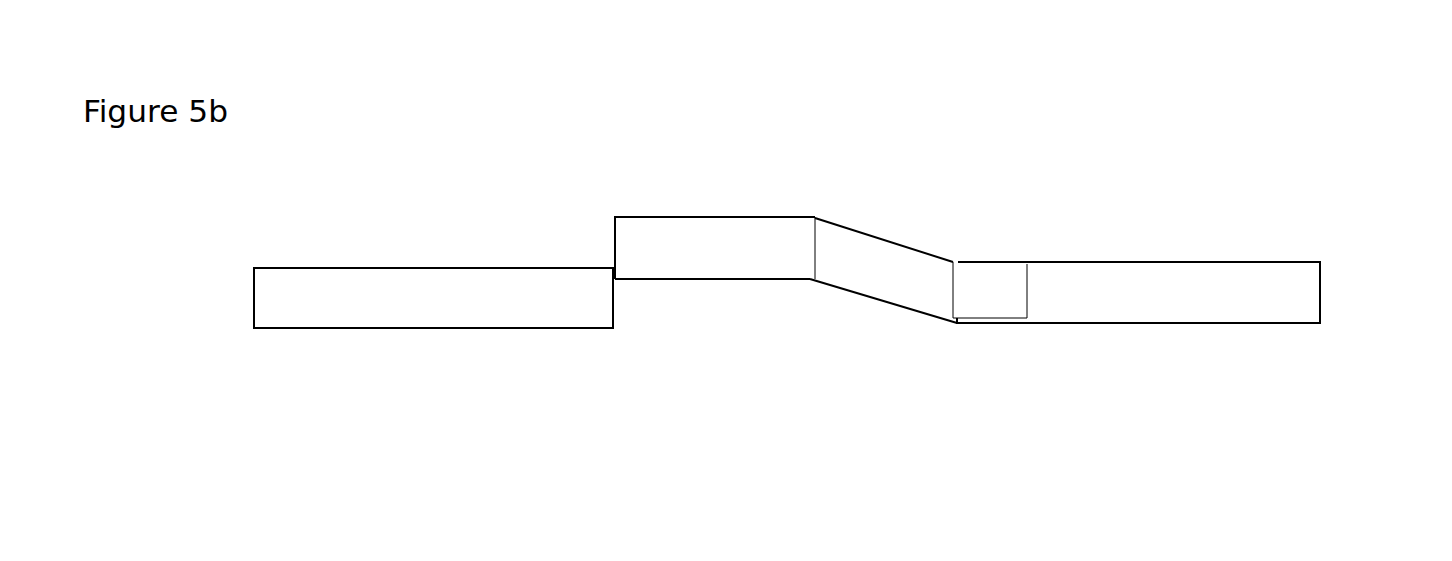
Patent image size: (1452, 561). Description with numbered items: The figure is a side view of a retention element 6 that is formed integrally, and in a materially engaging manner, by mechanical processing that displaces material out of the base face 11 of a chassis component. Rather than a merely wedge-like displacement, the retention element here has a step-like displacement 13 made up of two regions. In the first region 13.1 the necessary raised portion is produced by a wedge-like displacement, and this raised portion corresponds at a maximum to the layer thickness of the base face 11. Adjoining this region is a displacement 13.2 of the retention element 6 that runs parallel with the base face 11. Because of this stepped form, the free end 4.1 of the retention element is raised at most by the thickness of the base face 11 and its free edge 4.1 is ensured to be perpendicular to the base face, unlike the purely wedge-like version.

The base face 11 is at (352, 310).
The free end 4.1 is at (749, 227).
The retention element 6 is at (797, 245).
The step-like displacement 13 is at (749, 270).
The region of wedge-like displacement 13.1 is at (918, 305).
The displacement parallel with the base face 13.2 is at (712, 257).